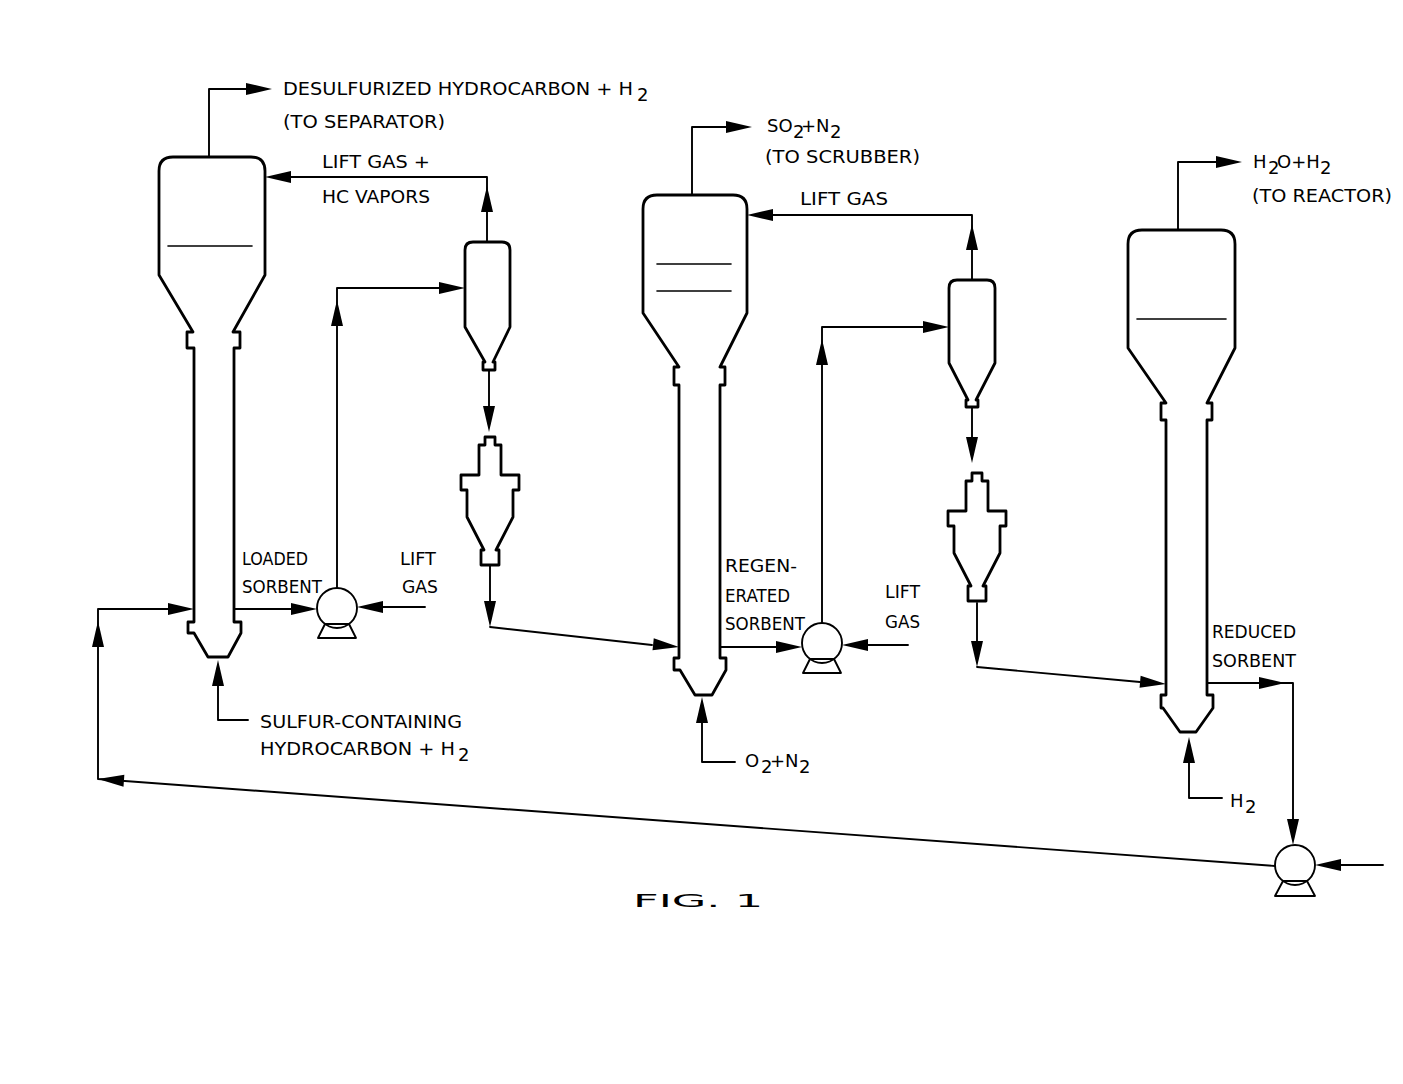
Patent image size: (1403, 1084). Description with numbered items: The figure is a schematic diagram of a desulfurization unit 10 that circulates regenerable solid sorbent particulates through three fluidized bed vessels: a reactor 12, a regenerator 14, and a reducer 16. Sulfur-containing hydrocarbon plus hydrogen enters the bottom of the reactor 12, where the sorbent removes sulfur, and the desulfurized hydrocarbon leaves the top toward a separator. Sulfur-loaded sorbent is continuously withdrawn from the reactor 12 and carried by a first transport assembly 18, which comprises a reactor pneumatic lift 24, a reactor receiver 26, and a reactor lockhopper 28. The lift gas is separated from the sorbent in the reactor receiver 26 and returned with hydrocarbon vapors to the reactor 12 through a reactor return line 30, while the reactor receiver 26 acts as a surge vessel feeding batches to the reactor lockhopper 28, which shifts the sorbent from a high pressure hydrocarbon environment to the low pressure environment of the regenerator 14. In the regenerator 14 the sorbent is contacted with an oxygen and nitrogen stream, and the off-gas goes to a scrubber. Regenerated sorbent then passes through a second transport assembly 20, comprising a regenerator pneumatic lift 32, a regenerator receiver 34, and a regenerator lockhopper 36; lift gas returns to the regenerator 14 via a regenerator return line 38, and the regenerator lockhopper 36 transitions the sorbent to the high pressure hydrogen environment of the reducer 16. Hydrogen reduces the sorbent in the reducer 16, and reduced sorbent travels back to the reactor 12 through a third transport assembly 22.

The desulfurization unit 10 is at (1042, 130).
The fluidized bed reactor 12 is at (159, 207).
The fluidized bed regenerator 14 is at (643, 243).
The fluidized bed reducer 16 is at (1128, 280).
The first transport assembly 18 is at (520, 405).
The second transport assembly 20 is at (1007, 445).
The third transport assembly 22 is at (904, 848).
The reactor pneumatic lift 24 is at (353, 622).
The reactor receiver 26 is at (510, 297).
The reactor lockhopper 28 is at (517, 512).
The reactor return line 30 is at (466, 177).
The regenerator pneumatic lift 32 is at (843, 657).
The regenerator receiver 34 is at (995, 333).
The regenerator lockhopper 36 is at (1000, 547).
The regenerator return line 38 is at (952, 215).